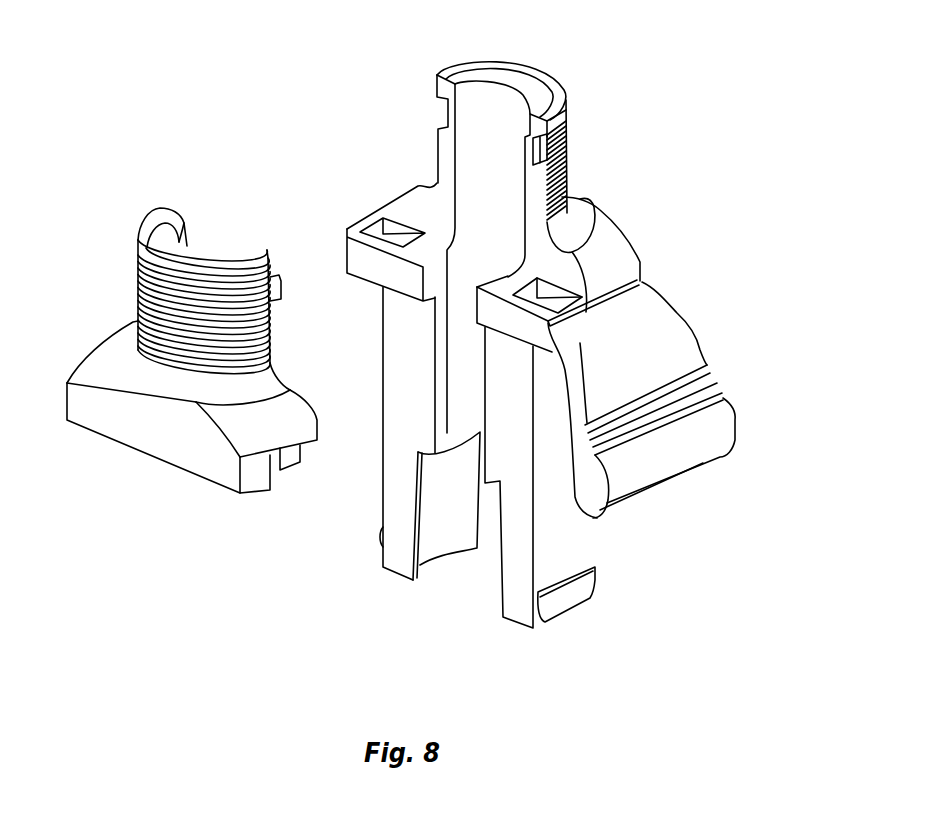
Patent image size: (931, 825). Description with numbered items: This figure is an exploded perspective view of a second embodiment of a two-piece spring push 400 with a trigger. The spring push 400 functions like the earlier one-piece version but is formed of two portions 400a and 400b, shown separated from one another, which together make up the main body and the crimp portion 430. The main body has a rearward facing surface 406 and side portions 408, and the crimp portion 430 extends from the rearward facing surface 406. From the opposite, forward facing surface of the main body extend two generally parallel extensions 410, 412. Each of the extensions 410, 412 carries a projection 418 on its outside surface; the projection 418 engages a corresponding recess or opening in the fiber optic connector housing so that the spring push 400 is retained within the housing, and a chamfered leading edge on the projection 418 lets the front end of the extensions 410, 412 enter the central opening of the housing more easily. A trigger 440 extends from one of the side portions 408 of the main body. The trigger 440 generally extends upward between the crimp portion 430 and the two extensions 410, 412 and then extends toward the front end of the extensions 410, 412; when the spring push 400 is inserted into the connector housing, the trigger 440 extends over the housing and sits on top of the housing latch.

The spring push 400 is at (783, 37).
The first portion of spring push 400a is at (147, 217).
The second portion of spring push 400b is at (540, 70).
The rearward facing surface 406 is at (583, 210).
The side portions 408 is at (148, 438).
The generally parallel extension 410 is at (383, 500).
The generally parallel extension 412 is at (590, 537).
The projection 418 is at (598, 581).
The crimp portion 430 is at (572, 165).
The trigger 440 is at (737, 427).